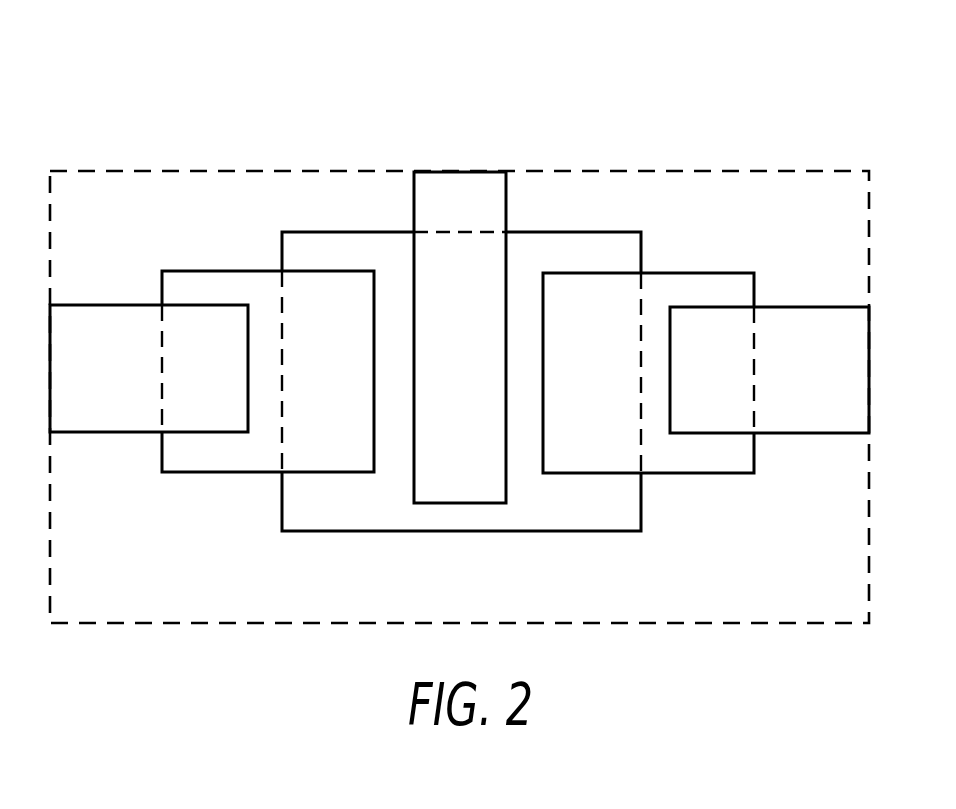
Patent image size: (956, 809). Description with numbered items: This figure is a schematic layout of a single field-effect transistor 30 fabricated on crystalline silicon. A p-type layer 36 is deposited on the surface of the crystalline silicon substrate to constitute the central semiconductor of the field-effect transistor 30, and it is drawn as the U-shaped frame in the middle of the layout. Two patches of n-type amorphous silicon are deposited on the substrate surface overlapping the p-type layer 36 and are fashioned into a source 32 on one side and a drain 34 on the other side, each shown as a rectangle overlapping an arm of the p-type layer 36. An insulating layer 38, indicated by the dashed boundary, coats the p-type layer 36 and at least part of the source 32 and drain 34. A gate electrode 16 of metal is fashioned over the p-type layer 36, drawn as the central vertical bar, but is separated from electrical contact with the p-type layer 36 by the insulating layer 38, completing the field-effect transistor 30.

The field-effect transistor 30 is at (330, 140).
The gate electrode 16 is at (462, 172).
The drain 34 is at (229, 270).
The p-type layer 36 is at (565, 232).
The source 32 is at (680, 273).
The insulating layer 38 is at (765, 228).